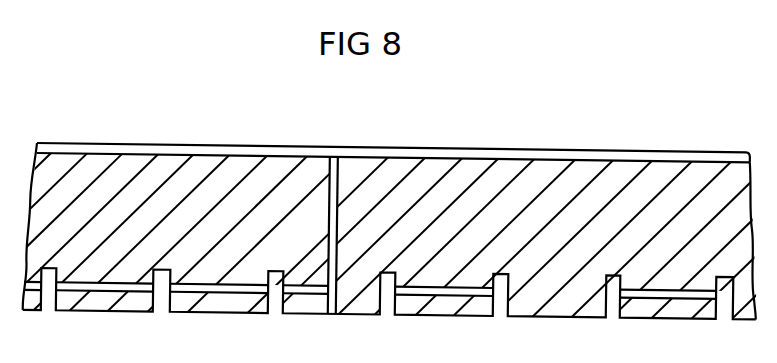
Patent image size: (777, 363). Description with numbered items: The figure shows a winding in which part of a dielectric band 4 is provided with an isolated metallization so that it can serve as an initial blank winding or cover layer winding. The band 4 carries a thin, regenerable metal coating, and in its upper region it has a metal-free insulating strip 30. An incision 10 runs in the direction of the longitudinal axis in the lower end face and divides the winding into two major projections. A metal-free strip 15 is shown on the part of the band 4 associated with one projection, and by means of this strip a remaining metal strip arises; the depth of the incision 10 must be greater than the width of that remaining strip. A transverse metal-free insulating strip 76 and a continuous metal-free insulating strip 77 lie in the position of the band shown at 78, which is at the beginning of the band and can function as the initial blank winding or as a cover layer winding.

The dielectric band 4 is at (465, 138).
The metal-free insulating strip 30 is at (587, 155).
The band portion forming initial blank winding or cover layer winding 78 is at (127, 172).
The transverse metal-free insulating strip 76 is at (336, 187).
The incision 10 is at (277, 298).
The continuous metal-free insulating strip 77 is at (30, 280).
The metal-free strip 15 is at (430, 290).